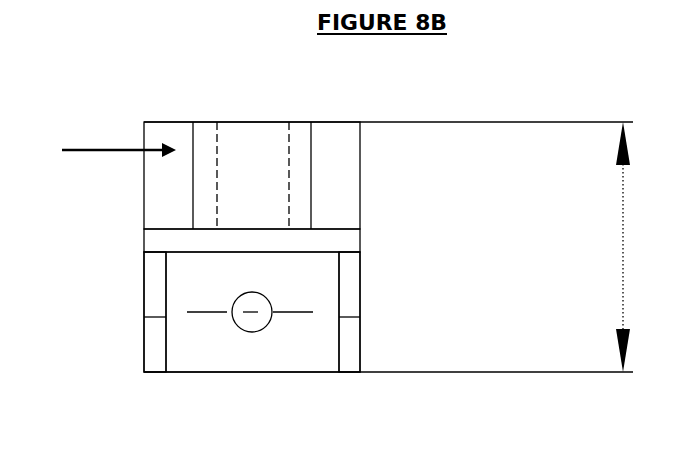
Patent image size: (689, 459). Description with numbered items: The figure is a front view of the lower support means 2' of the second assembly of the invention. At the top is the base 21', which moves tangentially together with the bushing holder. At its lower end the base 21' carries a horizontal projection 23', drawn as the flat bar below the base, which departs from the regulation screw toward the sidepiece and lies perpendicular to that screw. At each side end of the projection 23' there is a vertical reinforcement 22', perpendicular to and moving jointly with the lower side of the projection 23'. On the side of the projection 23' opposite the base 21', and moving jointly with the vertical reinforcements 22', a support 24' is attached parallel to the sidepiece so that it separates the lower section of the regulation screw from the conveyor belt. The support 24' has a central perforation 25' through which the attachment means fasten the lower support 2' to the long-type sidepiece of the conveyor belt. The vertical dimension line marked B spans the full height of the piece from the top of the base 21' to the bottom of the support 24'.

The lower support means 2' is at (106, 145).
The base 21' is at (275, 159).
The vertical reinforcement 22' is at (288, 336).
The horizontal projection 23' is at (226, 228).
The support 24' is at (226, 312).
The central perforation 25' is at (250, 355).
The dimension B is at (388, 247).